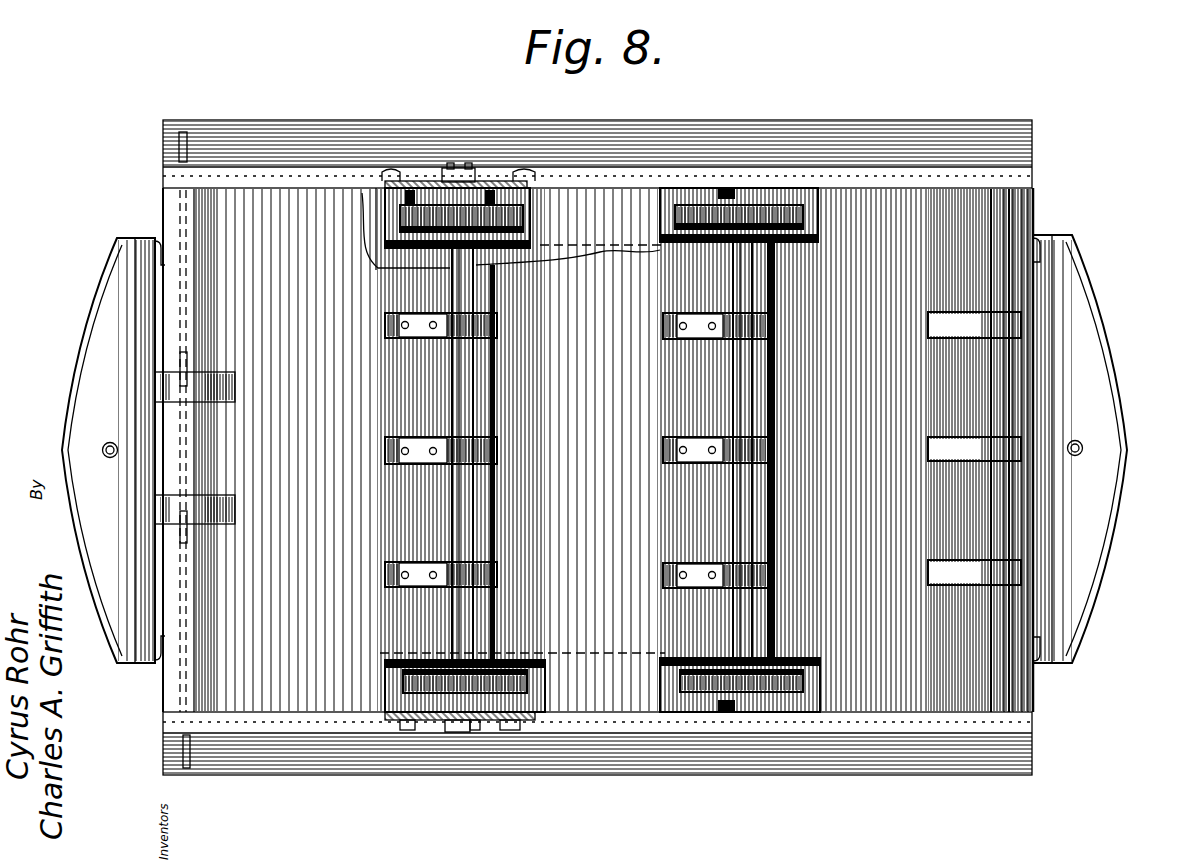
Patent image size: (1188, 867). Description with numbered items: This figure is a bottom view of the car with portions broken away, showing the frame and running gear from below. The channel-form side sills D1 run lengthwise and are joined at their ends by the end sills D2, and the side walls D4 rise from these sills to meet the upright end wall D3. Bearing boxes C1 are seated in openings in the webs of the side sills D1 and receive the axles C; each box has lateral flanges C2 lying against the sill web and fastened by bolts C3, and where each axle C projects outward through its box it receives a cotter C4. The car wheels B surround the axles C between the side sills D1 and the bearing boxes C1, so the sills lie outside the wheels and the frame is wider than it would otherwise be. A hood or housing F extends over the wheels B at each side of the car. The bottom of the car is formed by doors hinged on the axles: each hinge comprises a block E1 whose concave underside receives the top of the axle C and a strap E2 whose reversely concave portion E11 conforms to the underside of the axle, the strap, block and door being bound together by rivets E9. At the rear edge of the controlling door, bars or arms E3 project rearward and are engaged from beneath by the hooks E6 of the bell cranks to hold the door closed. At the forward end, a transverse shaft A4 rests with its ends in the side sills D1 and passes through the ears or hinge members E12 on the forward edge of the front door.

The shaft A4 is at (1000, 382).
The car wheels B is at (395, 215).
The axles C is at (480, 178).
The bearing boxes C1 is at (447, 203).
The lateral flanges C2 is at (455, 178).
The bolts C3 is at (425, 185).
The cotter C4 is at (467, 165).
The side sills D1 is at (172, 176).
The end sills D2 is at (88, 386).
The upright end wall D3 is at (1030, 234).
The side walls D4 is at (962, 130).
The hinge block E1 is at (387, 327).
The strap E2 is at (420, 342).
The bars or arms E3 is at (168, 392).
The hook E6 is at (182, 360).
The rivets E9 is at (436, 320).
The reversely concave portion E11 is at (462, 330).
The ears or hinge members E12 is at (995, 322).
The hood or housing F is at (575, 197).